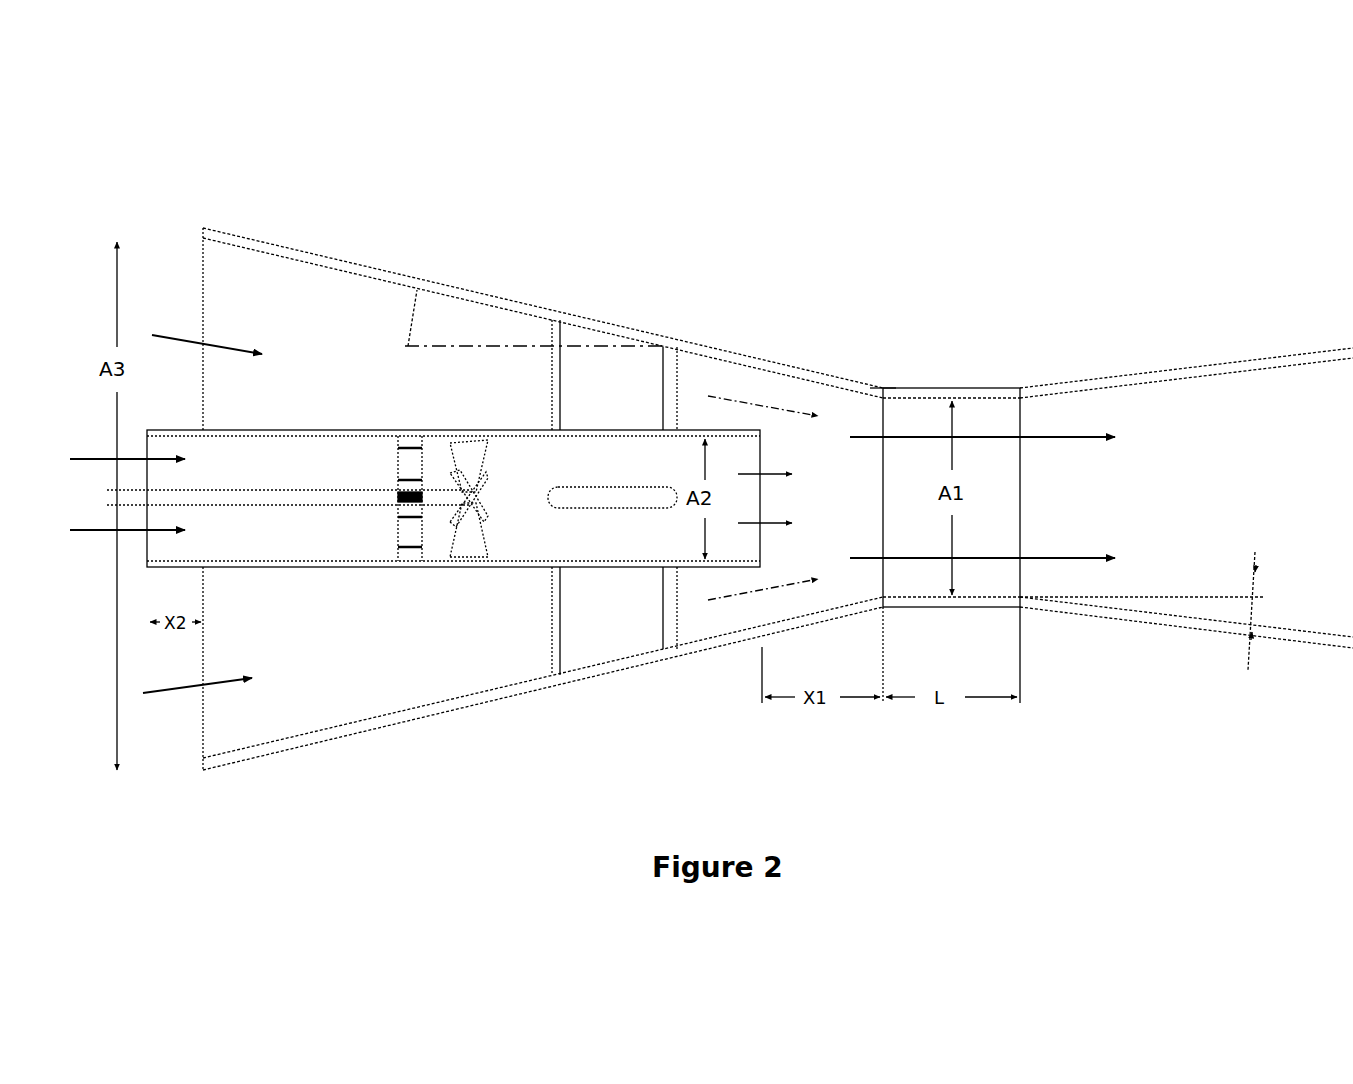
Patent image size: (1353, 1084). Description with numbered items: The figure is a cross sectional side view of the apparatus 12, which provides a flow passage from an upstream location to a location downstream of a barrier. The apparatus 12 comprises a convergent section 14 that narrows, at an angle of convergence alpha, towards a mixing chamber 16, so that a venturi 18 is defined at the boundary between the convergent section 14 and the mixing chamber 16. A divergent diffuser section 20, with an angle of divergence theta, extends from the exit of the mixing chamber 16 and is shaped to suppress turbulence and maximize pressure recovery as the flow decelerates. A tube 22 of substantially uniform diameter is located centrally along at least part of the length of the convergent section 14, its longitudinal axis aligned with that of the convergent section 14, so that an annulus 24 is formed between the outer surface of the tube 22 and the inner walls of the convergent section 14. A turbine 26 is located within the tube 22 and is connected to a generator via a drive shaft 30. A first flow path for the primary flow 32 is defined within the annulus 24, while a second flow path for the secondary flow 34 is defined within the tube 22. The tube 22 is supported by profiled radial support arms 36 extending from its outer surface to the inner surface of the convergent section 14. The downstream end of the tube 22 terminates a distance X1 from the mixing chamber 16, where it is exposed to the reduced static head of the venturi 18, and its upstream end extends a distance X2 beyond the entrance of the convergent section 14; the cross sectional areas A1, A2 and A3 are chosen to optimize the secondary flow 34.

The apparatus 12 is at (1073, 294).
The convergent section 14 is at (362, 732).
The mixing chamber 16 is at (923, 385).
The venturi 18 is at (885, 392).
The divergent diffuser section 20 is at (1317, 640).
The tube 22 is at (330, 430).
The annulus 24 is at (285, 312).
The turbine 26 is at (470, 558).
The drive shaft 30 is at (337, 498).
The primary flow 32 is at (180, 335).
The secondary flow 34 is at (770, 468).
The radial support arms 36 is at (632, 635).